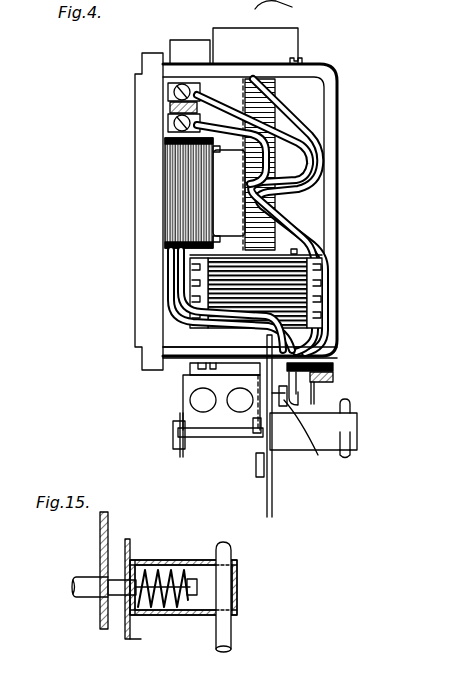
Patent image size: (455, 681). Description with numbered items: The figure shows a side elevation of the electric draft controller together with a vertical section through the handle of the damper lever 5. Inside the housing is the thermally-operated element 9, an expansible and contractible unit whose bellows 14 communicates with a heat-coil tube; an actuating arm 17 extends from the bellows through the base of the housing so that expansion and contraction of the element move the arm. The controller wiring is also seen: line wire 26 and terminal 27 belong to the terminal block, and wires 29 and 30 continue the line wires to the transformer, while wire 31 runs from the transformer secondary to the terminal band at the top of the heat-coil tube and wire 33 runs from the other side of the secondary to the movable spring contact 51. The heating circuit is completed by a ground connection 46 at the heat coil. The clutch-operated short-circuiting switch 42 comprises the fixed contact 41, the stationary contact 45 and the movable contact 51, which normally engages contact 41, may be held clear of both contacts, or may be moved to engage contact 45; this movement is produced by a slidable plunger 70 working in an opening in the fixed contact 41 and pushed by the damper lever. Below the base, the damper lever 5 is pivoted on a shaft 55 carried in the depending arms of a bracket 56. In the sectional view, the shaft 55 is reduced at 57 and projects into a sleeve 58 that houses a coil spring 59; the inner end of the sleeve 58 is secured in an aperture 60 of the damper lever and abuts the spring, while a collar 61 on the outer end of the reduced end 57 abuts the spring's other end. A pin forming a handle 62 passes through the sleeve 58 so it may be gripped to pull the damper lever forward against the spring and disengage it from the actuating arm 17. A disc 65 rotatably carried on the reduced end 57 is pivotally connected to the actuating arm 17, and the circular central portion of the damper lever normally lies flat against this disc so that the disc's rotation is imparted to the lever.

In FIG. 4, the damper lever 5 is at (273, 494).
In FIG. 15, the damper lever 5 is at (134, 639).
In FIG. 4, the thermally-operated element 9 is at (338, 284).
In FIG. 4, the bellows 14 is at (322, 313).
In FIG. 4, the actuating arm 17 is at (240, 357).
In FIG. 4, the line wire 26 is at (166, 92).
In FIG. 4, the terminal 27 is at (166, 123).
In FIG. 4, the wire 29 is at (231, 150).
In FIG. 4, the wire 30 is at (222, 95).
In FIG. 4, the wire 31 is at (290, 126).
In FIG. 4, the wire 33 is at (290, 233).
In FIG. 4, the fixed contact 41 is at (303, 436).
In FIG. 4, the clutch-operated short-circuiting switch 42 is at (355, 394).
In FIG. 4, the stationary contact 45 is at (324, 394).
In FIG. 4, the ground connection 46 is at (297, 252).
In FIG. 4, the movable spring contact 51 is at (330, 378).
In FIG. 4, the shaft 55 is at (174, 441).
In FIG. 15, the shaft 55 is at (93, 585).
In FIG. 4, the bracket 56 is at (185, 406).
In FIG. 15, the reduced end 57 is at (118, 596).
In FIG. 4, the sleeve 58 is at (357, 429).
In FIG. 15, the sleeve 58 is at (170, 562).
In FIG. 15, the coil spring 59 is at (168, 610).
In FIG. 15, the aperture 60 is at (128, 622).
In FIG. 15, the collar 61 is at (190, 578).
In FIG. 4, the handle 62 is at (350, 458).
In FIG. 15, the handle 62 is at (232, 550).
In FIG. 4, the disc 65 is at (256, 465).
In FIG. 15, the disc 65 is at (110, 532).
In FIG. 4, the slidable plunger 70 is at (283, 397).